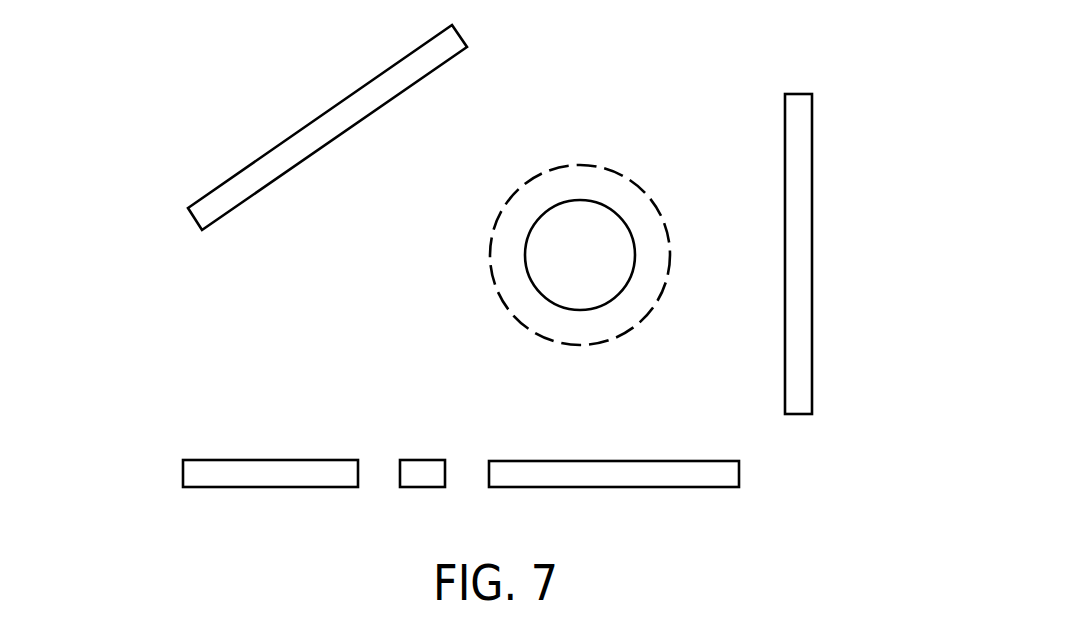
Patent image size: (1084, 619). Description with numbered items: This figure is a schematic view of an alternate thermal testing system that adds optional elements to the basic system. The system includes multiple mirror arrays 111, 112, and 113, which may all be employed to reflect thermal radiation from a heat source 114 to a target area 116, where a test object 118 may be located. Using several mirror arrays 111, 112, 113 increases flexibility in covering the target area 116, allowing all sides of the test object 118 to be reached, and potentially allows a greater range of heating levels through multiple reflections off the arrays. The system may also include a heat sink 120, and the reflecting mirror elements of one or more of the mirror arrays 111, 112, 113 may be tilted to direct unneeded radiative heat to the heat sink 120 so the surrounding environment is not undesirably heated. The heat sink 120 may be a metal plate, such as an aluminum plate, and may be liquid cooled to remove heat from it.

The mirror array 111 is at (192, 217).
The mirror array 112 is at (812, 253).
The mirror array 113 is at (740, 472).
The heat source 114 is at (270, 460).
The target area 116 is at (490, 257).
The test object 118 is at (578, 200).
The heat sink 120 is at (422, 460).